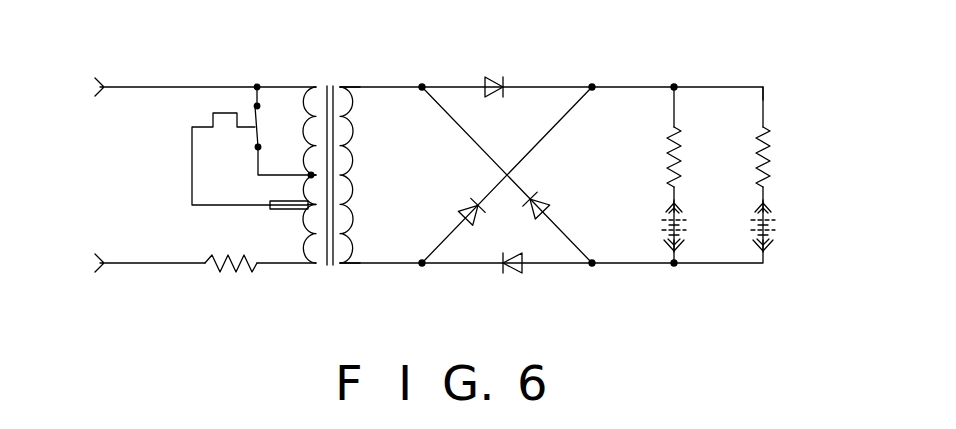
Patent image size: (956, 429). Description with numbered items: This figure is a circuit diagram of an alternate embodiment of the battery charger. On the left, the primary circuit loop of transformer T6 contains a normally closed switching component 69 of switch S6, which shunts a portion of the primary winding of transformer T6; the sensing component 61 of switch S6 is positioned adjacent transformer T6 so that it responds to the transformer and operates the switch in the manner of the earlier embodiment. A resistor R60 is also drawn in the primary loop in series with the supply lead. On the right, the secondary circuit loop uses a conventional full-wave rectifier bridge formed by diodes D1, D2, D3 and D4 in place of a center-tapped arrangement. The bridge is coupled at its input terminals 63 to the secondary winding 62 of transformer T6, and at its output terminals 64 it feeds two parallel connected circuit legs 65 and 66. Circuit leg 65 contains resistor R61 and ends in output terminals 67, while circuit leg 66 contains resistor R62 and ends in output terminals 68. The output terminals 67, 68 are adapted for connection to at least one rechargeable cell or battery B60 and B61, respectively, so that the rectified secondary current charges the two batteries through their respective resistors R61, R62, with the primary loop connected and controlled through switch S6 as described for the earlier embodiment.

The transformer T6 is at (327, 85).
The switch S6 is at (259, 122).
The normally closed switching component 69 is at (258, 157).
The sensing component 61 is at (296, 214).
The resistor R60 is at (216, 271).
The secondary winding 62 is at (352, 88).
The input terminals 63 is at (423, 86).
The output terminals 64 is at (590, 86).
The circuit leg 65 is at (676, 88).
The circuit leg 66 is at (765, 92).
The rectifier diode D1 is at (491, 76).
The rectifier diode D2 is at (537, 200).
The rectifier diode D3 is at (506, 275).
The rectifier diode D4 is at (471, 206).
The resistor R61 is at (683, 158).
The resistor R62 is at (772, 158).
The rechargeable cell or battery B60 is at (662, 230).
The rechargeable cell or battery B61 is at (778, 228).
The output terminals 67 is at (680, 205).
The output terminals 68 is at (771, 208).